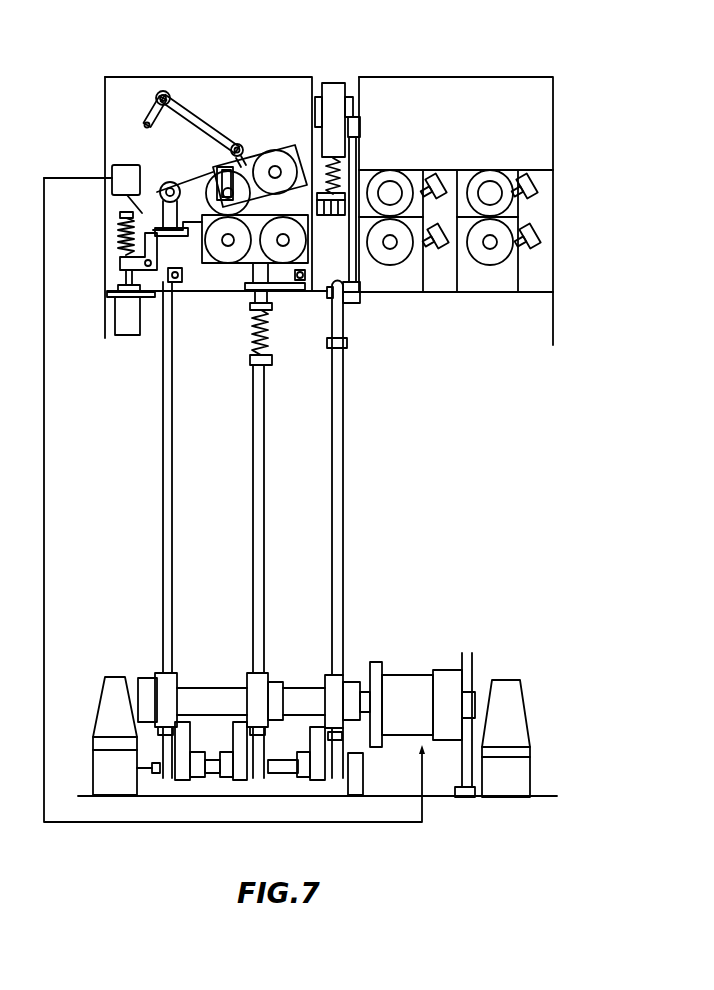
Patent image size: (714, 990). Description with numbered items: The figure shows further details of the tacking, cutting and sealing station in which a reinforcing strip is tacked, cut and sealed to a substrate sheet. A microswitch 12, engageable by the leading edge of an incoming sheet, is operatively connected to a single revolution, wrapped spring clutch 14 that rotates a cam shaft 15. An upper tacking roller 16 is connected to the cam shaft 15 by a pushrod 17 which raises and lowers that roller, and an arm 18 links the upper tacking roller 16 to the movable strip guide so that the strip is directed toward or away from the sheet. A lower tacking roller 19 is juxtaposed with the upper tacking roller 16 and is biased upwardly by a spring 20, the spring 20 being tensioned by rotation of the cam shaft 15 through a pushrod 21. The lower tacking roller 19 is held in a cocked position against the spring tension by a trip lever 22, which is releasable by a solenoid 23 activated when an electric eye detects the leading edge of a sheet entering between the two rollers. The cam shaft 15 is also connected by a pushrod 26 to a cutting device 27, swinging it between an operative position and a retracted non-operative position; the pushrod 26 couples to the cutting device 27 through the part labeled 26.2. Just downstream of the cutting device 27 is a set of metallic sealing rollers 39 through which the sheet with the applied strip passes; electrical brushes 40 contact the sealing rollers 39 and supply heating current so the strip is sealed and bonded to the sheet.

The microswitch 12 is at (120, 176).
The wrapped spring clutch 14 is at (412, 676).
The cam shaft 15 is at (141, 678).
The upper tacking roller 16 is at (270, 150).
The pushrod 17 is at (163, 503).
The arm 18 is at (186, 103).
The lower tacking roller 19 is at (243, 267).
The spring 20 is at (268, 330).
The pushrod 21 is at (265, 472).
The trip lever 22 is at (152, 242).
The solenoid 23 is at (128, 320).
The pushrod 26 is at (344, 428).
The link bracket 26.2 is at (360, 270).
The cutting device 27 is at (340, 83).
The metallic sealing rollers 39 is at (495, 175).
The electrical brushes 40 is at (542, 187).